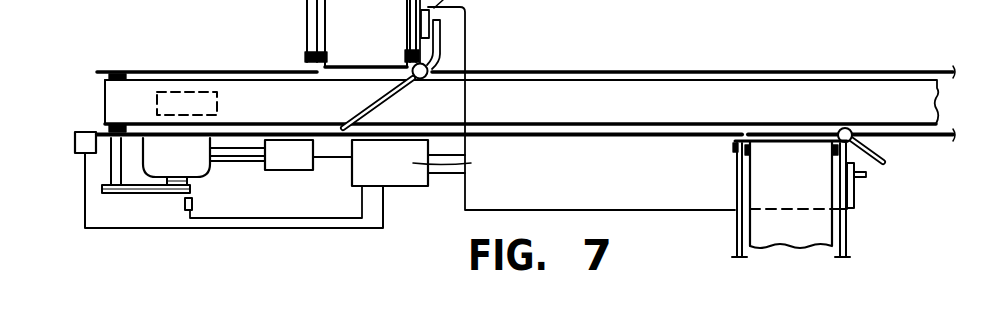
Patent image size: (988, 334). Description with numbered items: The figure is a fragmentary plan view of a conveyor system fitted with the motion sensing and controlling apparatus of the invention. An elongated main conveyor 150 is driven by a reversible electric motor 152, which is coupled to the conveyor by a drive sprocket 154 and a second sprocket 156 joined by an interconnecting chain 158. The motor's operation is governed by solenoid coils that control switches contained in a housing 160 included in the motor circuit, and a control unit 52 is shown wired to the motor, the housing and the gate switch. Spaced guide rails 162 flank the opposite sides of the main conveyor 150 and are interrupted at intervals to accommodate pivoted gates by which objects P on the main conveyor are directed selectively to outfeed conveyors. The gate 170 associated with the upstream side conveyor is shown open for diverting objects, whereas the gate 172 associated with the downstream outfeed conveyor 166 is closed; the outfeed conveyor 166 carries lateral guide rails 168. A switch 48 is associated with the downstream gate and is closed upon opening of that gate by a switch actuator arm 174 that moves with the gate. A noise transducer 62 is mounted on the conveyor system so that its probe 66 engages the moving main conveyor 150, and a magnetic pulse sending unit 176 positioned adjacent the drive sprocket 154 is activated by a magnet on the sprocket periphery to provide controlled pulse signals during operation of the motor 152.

The main conveyor 150 is at (620, 90).
The objects P is at (203, 91).
The guide rails 162 is at (160, 72).
The probe 66 is at (103, 103).
The noise transducer 62 is at (84, 150).
The sprocket 156 is at (113, 194).
The interconnecting chain 158 is at (150, 194).
The drive sprocket 154 is at (171, 194).
The electric motor 152 is at (191, 163).
The housing 160 is at (284, 169).
The control unit 52 is at (400, 188).
The magnetic pulse sending unit 176 is at (193, 203).
The switch actuator arm 174 is at (443, 42).
The gate 170 is at (386, 101).
The lateral guide rails 168 is at (736, 240).
The outfeed conveyor 166 is at (791, 238).
The gate 172 is at (779, 142).
The switch 48 is at (855, 187).